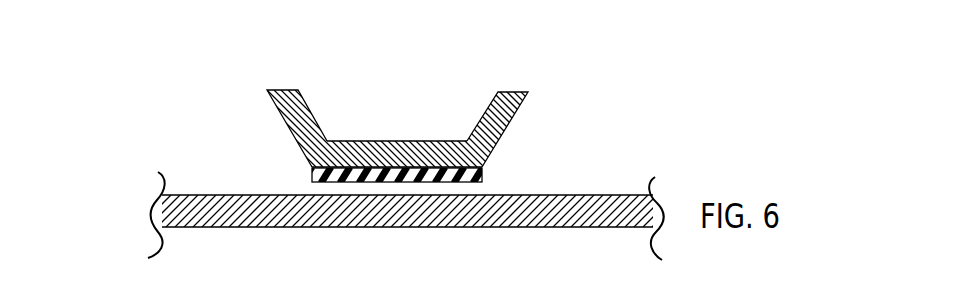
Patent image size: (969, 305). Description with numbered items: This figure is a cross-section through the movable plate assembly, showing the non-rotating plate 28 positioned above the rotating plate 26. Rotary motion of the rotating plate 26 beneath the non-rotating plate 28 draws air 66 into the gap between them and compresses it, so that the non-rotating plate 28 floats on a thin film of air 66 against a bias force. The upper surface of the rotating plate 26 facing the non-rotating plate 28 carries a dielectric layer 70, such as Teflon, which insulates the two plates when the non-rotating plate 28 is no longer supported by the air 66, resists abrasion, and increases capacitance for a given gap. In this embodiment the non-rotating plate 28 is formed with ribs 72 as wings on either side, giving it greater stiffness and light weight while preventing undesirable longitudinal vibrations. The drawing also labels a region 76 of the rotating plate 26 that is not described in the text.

The non-rotating plate 28 is at (390, 88).
The ribs 72 is at (283, 89).
The dielectric layer 70 is at (485, 177).
The air 66 is at (342, 185).
The rotating plate 26 is at (600, 196).
The panel core 76 is at (442, 222).